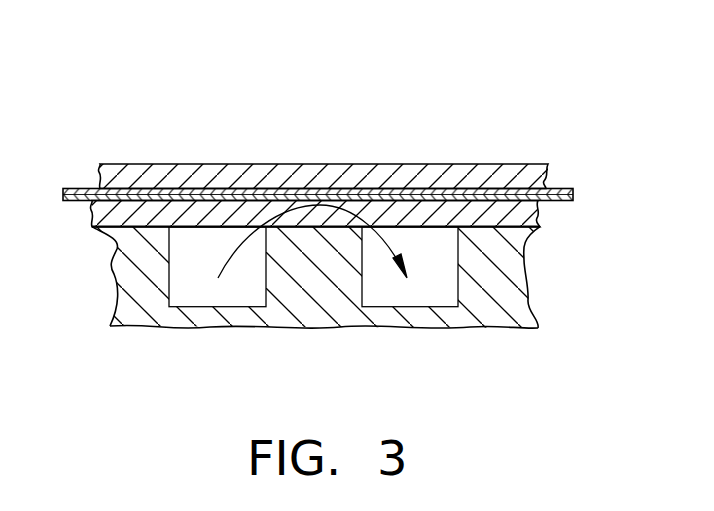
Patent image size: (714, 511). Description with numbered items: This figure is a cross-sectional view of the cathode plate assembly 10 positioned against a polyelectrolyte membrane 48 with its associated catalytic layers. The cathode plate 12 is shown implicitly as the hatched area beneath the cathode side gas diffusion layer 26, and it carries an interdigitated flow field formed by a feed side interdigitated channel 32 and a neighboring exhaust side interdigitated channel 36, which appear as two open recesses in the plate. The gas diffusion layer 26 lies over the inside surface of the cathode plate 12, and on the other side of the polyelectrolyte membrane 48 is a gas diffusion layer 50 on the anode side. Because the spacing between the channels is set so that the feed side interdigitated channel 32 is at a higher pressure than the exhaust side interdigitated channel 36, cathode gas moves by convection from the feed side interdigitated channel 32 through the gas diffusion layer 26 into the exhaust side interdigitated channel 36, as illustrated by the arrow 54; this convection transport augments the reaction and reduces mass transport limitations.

The cathode plate assembly 10 is at (363, 213).
The cathode plate 12 is at (512, 300).
The gas diffusion layer 26 is at (141, 219).
The feed side interdigitated channel 32 is at (238, 298).
The exhaust side interdigitated channel 36 is at (415, 295).
The polyelectrolyte membrane 48 is at (562, 190).
The gas diffusion layer 50 is at (168, 170).
The arrow 54 is at (232, 252).